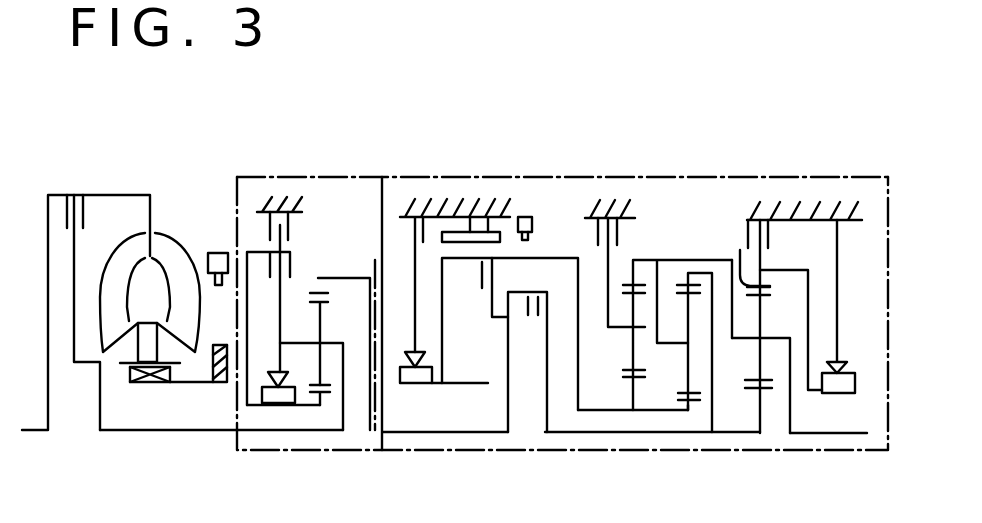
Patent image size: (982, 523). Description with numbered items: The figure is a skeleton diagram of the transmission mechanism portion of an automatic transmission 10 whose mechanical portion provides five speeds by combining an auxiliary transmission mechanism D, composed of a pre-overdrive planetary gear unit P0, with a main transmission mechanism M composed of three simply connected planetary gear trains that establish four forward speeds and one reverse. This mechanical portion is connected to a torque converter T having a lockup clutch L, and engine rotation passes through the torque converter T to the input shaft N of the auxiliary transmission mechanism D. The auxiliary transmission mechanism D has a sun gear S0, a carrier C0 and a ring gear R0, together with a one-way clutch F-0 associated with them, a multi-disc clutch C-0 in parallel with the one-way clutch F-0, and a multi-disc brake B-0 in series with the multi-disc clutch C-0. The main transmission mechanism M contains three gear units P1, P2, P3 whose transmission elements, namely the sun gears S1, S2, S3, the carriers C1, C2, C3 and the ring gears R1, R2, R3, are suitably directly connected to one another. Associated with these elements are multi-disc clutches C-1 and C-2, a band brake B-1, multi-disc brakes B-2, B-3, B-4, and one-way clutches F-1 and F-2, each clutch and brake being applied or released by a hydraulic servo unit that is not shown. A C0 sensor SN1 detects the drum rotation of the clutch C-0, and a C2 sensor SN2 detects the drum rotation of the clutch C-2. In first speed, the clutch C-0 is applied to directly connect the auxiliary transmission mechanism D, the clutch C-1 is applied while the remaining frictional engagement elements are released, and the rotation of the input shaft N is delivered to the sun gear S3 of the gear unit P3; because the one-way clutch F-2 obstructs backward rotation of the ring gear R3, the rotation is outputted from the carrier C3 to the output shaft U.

The torque converter T is at (160, 196).
The lockup clutch L is at (75, 200).
The input shaft N is at (157, 432).
The C0 sensor SN1 is at (206, 258).
The C2 sensor SN2 is at (527, 215).
The multi-disc clutch C-0 is at (268, 258).
The multi-disc brake B-0 is at (268, 230).
The ring gear R0 is at (314, 291).
The carrier C0 is at (330, 342).
The sun gear S0 is at (325, 396).
The pre-overdrive planetary gear unit P0 is at (302, 411).
The one-way clutch F-0 is at (270, 400).
The auxiliary transmission mechanism D is at (357, 462).
The main transmission mechanism M is at (695, 175).
The automatic transmission 10 is at (539, 176).
The band brake B-1 is at (480, 225).
The multi-disc brake B-2 is at (405, 228).
The multi-disc brake B-3 is at (597, 236).
The multi-disc brake B-4 is at (760, 222).
The one-way clutch F-1 is at (416, 384).
The one-way clutch F-2 is at (832, 393).
The multi-disc clutch C-1 is at (552, 303).
The multi-disc clutch C-2 is at (481, 266).
The ring gear R1 is at (646, 260).
The carrier C1 is at (620, 330).
The sun gear S1 is at (625, 373).
The gear unit P1 is at (626, 417).
The ring gear R2 is at (702, 269).
The carrier C2 is at (672, 338).
The sun gear S2 is at (680, 397).
The gear unit P2 is at (688, 417).
The ring gear R3 is at (740, 250).
The carrier C3 is at (772, 337).
The sun gear S3 is at (750, 390).
The gear unit P3 is at (766, 423).
The output shaft U is at (847, 436).